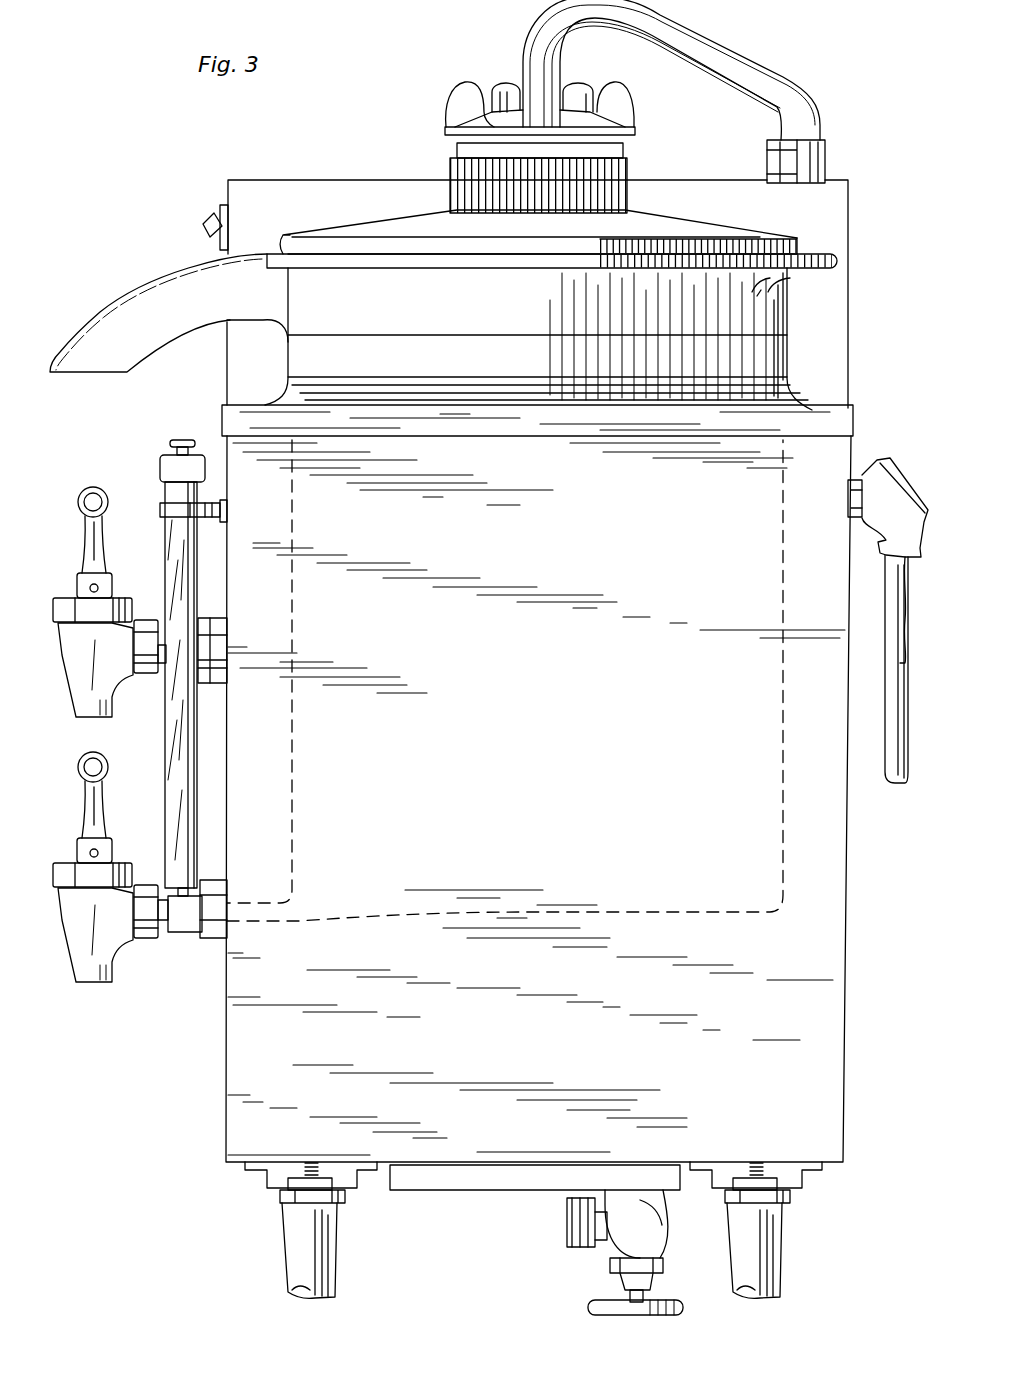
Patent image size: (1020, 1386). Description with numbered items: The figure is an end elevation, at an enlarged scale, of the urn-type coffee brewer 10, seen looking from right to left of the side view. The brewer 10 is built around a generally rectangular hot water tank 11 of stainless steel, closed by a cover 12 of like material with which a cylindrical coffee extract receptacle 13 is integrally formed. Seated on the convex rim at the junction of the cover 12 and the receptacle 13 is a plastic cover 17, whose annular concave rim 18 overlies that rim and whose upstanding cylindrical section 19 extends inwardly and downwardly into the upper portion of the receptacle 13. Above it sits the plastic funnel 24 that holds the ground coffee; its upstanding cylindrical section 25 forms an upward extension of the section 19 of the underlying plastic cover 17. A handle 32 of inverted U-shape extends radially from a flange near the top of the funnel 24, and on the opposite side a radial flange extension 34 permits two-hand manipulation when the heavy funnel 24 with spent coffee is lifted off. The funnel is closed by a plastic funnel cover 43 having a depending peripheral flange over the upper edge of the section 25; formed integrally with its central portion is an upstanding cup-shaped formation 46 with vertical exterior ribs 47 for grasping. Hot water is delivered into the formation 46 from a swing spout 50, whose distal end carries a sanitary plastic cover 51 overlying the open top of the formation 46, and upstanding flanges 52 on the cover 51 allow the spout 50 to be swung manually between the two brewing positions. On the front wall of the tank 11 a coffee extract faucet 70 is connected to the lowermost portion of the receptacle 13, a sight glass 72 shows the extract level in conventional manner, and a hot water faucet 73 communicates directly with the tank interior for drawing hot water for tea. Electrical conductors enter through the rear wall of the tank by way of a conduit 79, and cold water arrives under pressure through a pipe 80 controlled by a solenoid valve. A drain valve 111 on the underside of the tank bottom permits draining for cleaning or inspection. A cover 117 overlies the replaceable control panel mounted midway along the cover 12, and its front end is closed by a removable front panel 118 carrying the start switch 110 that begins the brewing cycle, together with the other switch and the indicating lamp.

The urn-type coffee brewer 10 is at (142, 132).
The hot water tank 11 is at (853, 1047).
The cover 12 is at (838, 407).
The coffee extract receptacle 13 is at (300, 641).
The plastic cover 17 is at (817, 364).
The annular concave rim 18 is at (278, 395).
The upstanding cylindrical section 19 is at (789, 354).
The plastic funnel 24 is at (841, 290).
The upstanding cylindrical section 25 is at (776, 312).
The handle 32 is at (132, 286).
The radial flange extension 34 is at (830, 257).
The plastic funnel cover 43 is at (775, 220).
The cup-shaped formation 46 is at (458, 151).
The vertical exterior ribs 47 is at (626, 173).
The swing spout 50 is at (738, 52).
The sanitary plastic cover 51 is at (592, 122).
The upstanding flanges 52 is at (472, 100).
The coffee extract faucet 70 is at (113, 925).
The sight glass 72 is at (165, 743).
The hot water faucet 73 is at (108, 637).
The conduit 79 is at (880, 478).
The pipe 80 is at (895, 767).
The start switch 110 is at (185, 210).
The drain valve 111 is at (656, 1232).
The cover 117 is at (337, 190).
The removable front panel 118 is at (216, 196).